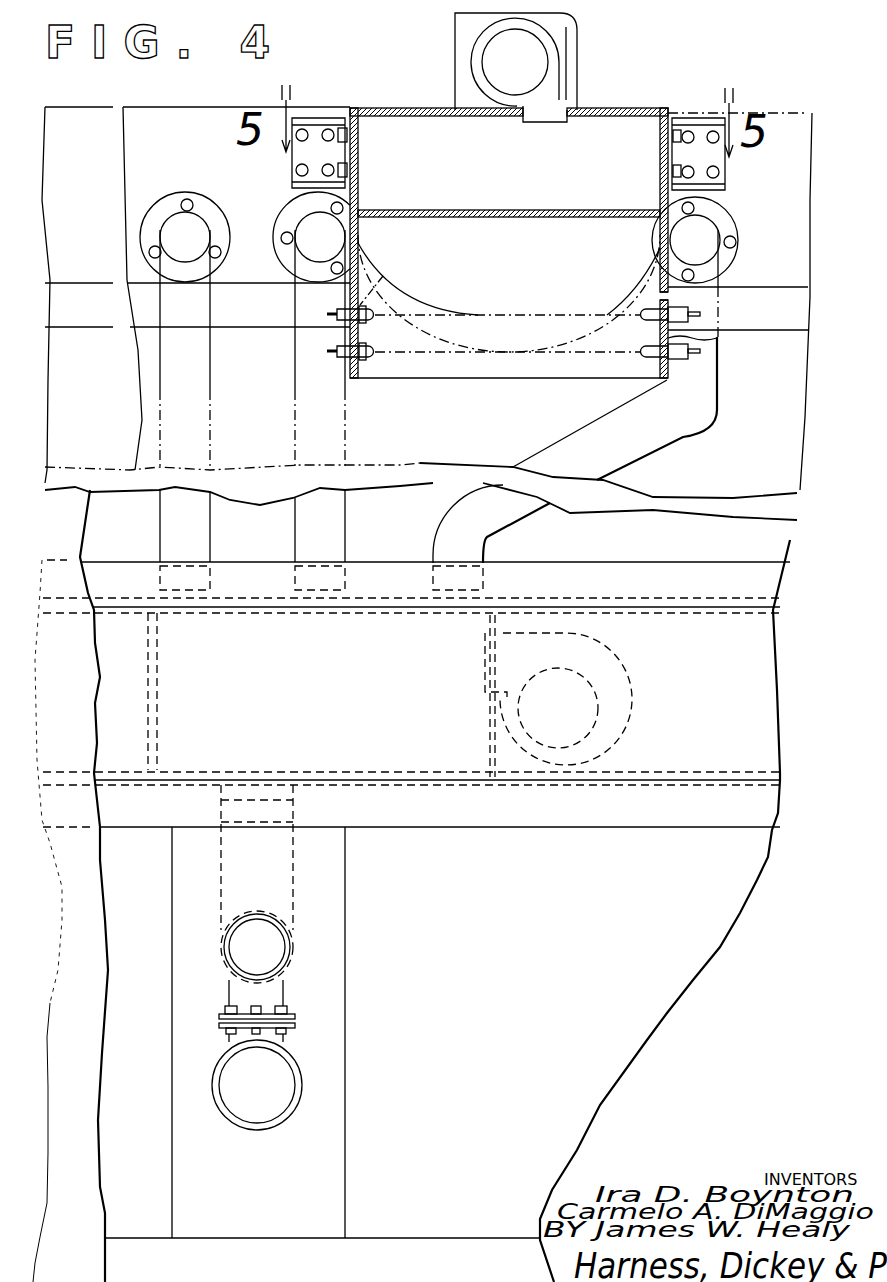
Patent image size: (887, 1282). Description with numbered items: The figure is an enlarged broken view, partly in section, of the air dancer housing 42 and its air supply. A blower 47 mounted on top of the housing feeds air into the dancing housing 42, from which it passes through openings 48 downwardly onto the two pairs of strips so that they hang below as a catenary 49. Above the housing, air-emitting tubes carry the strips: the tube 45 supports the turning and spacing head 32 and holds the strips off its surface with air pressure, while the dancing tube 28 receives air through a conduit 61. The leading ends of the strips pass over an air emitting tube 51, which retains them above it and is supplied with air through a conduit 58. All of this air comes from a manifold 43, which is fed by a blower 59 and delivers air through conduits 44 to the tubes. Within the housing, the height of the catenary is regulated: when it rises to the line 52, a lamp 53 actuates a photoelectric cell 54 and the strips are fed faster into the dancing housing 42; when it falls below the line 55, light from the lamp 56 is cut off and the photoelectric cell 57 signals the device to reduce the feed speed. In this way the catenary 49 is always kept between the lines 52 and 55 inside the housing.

The dancing tube 28 is at (182, 220).
The turning and spacing head 32 is at (279, 1074).
The air dancer housing 42 is at (617, 110).
The manifold 43 is at (353, 617).
The conduit 44 is at (330, 433).
The tube 45 is at (310, 218).
The blower 47 is at (562, 32).
The openings 48 is at (527, 210).
The catenary 49 is at (510, 300).
The air emitting tube 51 is at (713, 226).
The line 52 is at (587, 315).
The lamp 53 is at (383, 276).
The photoelectric cell 54 is at (693, 311).
The line 55 is at (567, 353).
The lamp 56 is at (357, 380).
The photoelectric cell 57 is at (685, 366).
The conduit 58 is at (668, 437).
The blower 59 is at (623, 697).
The conduit 61 is at (167, 415).